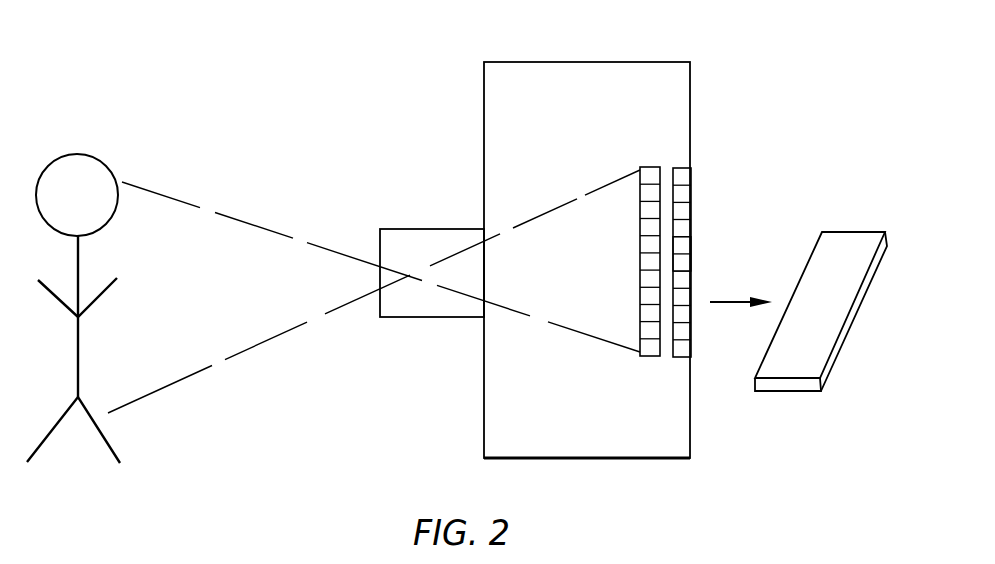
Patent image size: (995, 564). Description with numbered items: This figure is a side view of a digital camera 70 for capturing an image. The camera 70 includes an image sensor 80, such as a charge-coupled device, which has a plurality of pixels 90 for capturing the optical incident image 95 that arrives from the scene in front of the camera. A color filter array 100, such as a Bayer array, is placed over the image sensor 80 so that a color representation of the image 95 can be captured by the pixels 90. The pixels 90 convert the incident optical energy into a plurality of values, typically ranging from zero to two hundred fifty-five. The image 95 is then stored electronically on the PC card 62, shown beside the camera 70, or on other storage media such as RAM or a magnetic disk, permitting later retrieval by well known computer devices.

The PC card 62 is at (840, 240).
The camera 70 is at (627, 61).
The image sensor 80 is at (679, 168).
The pixels 90 is at (691, 259).
The optical incident image 95 is at (571, 331).
The color filter array 100 is at (650, 357).